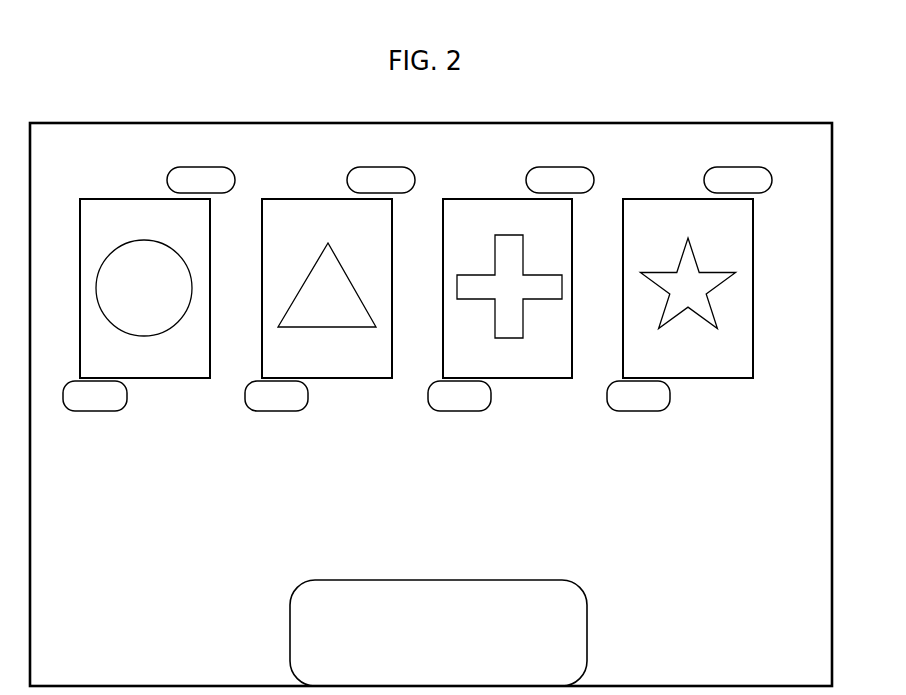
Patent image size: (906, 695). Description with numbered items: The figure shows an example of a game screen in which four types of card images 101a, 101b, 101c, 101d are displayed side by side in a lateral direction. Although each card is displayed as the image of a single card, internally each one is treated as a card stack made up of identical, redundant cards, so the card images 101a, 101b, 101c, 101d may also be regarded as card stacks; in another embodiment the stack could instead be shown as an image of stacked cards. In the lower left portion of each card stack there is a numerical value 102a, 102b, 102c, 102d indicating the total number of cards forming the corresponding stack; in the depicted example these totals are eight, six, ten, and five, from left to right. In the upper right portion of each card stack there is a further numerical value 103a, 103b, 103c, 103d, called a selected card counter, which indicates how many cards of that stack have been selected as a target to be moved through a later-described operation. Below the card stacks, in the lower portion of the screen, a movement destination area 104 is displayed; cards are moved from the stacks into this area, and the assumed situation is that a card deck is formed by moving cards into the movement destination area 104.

The card image 101a is at (98, 199).
The card image 101b is at (297, 199).
The card image 101c is at (477, 199).
The card image 101d is at (662, 199).
The total-number-of-cards numerical value 102a is at (80, 411).
The total-number-of-cards numerical value 102b is at (262, 411).
The total-number-of-cards numerical value 102c is at (445, 411).
The total-number-of-cards numerical value 102d is at (624, 411).
The selected card counter 103a is at (200, 167).
The selected card counter 103b is at (382, 167).
The selected card counter 103c is at (562, 167).
The selected card counter 103d is at (747, 167).
The movement destination area 104 is at (585, 587).